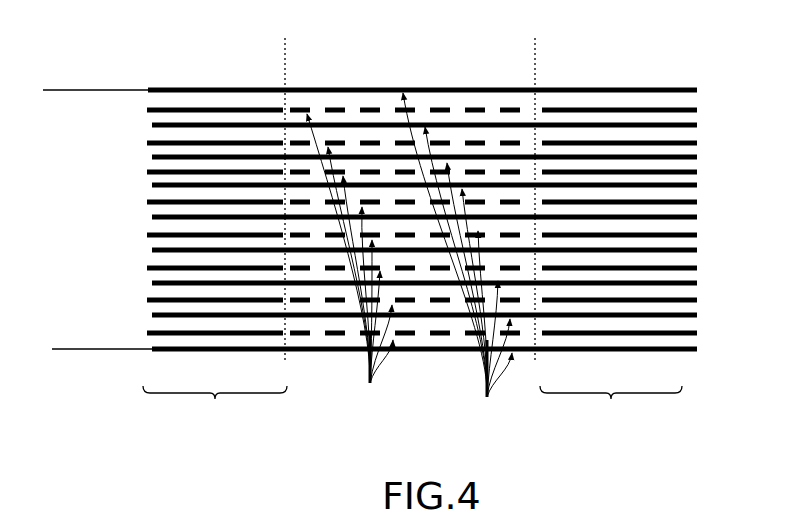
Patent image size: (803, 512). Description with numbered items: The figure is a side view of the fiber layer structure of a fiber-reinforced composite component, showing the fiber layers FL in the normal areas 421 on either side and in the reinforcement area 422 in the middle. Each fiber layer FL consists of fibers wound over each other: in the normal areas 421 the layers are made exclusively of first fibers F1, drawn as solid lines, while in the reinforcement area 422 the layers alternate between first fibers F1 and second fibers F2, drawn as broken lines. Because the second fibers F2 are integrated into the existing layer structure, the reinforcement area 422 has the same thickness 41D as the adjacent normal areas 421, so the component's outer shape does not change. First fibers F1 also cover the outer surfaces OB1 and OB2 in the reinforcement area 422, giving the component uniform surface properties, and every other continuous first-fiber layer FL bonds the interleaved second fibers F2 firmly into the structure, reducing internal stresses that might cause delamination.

The fiber layers FL is at (703, 70).
The normal area 421 is at (280, 49).
The reinforcement area 422 is at (530, 49).
The thickness 41D is at (83, 349).
The surface facing the connection surface OB1 is at (107, 355).
The surface facing away from the connection surface OB2 is at (57, 86).
The first fibers F1 is at (412, 263).
The second fibers F2 is at (350, 265).